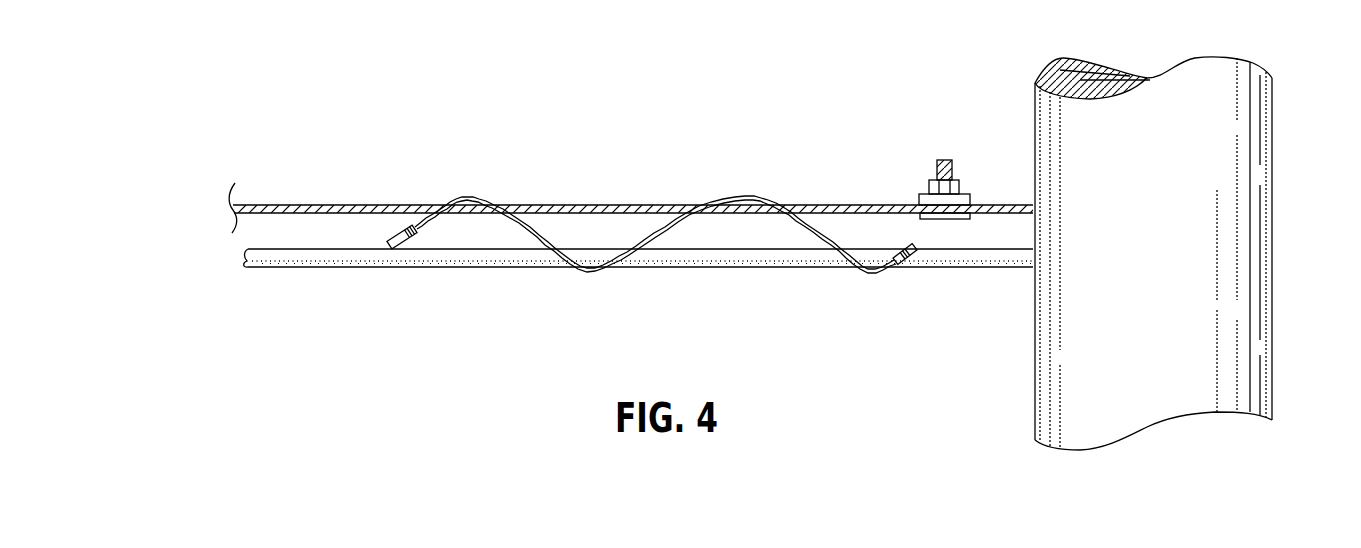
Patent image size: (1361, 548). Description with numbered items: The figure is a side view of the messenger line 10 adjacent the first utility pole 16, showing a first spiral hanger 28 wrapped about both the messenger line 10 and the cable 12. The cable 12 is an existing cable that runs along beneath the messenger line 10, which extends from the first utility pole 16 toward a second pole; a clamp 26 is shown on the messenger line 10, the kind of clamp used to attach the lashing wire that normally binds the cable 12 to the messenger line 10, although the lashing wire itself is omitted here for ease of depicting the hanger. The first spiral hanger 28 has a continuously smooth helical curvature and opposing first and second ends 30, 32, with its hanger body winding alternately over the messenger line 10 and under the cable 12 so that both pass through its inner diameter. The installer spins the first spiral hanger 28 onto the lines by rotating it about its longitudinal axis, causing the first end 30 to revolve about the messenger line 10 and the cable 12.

The messenger line 10 is at (573, 205).
The cable 12 is at (717, 262).
The first utility pole 16 is at (1260, 153).
The clamp 26 is at (919, 195).
The first spiral hanger 28 is at (600, 273).
The first end 30 is at (405, 248).
The second end 32 is at (903, 265).